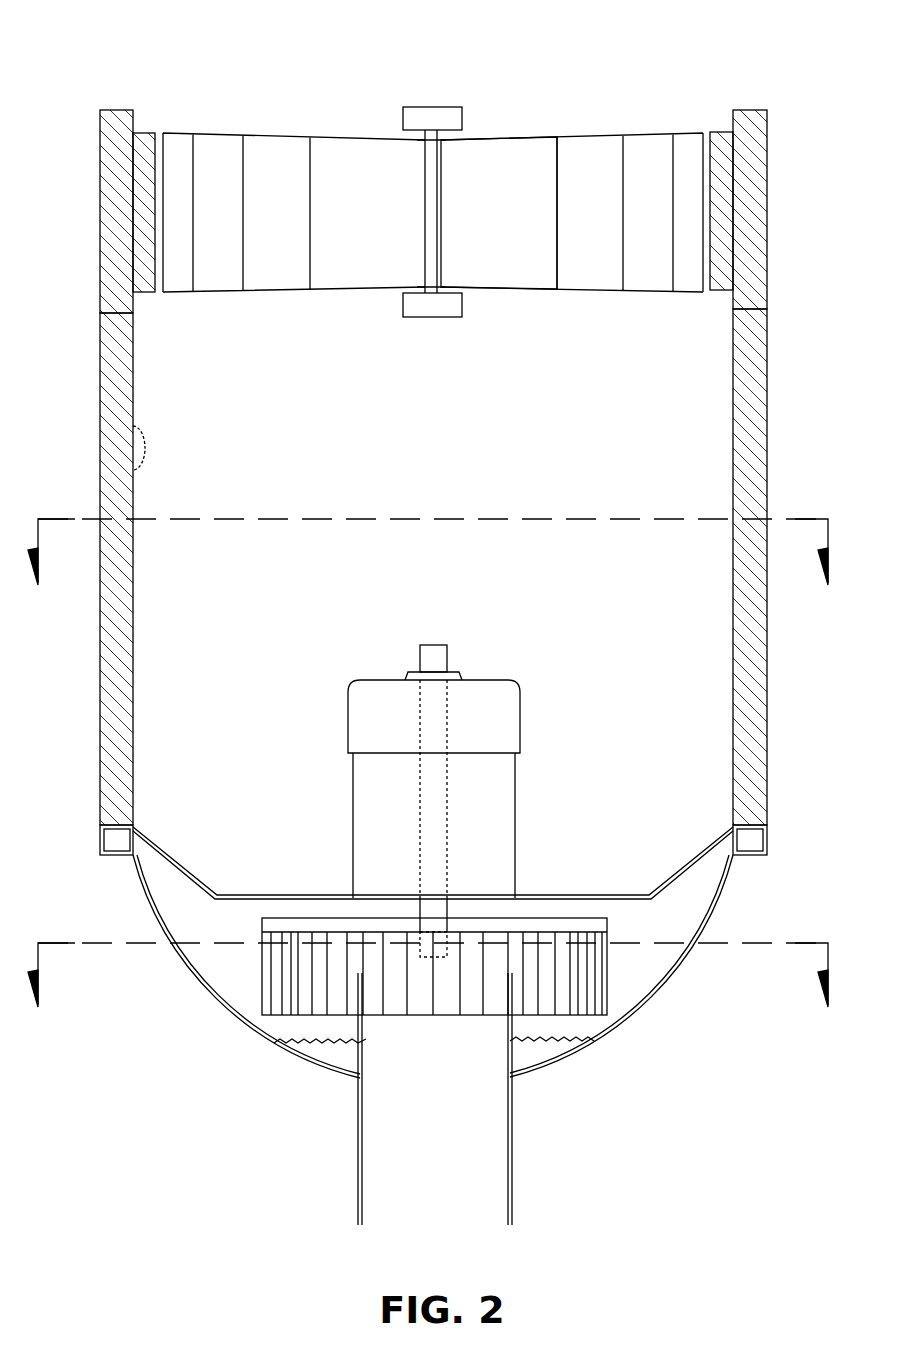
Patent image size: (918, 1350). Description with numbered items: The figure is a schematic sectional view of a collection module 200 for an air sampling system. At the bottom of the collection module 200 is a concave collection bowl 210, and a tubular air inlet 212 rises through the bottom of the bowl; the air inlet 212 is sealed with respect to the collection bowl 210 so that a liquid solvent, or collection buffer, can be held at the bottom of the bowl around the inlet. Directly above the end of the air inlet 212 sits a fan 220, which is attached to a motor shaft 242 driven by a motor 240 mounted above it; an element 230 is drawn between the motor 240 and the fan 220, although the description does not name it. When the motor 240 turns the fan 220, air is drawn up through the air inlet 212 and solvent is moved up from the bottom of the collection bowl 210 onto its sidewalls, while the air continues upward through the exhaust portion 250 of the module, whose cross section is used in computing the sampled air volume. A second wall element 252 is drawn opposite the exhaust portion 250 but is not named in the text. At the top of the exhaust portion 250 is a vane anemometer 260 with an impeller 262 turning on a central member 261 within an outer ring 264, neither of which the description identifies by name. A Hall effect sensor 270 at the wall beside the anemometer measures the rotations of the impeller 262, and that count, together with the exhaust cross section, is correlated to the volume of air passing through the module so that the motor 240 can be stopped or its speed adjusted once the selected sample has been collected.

The collection module 200 is at (127, 61).
The collection bowl 210 is at (660, 1003).
The air inlet 212 is at (513, 1144).
The fan 220 is at (419, 1017).
The conical plate 230 is at (175, 862).
The motor 240 is at (523, 681).
The motor shaft 242 is at (435, 644).
The exhaust portion 250 is at (134, 424).
The right vessel wall 252 is at (769, 469).
The vane anemometer 260 is at (214, 134).
The fan hub 261 is at (437, 106).
The impeller 262 is at (508, 276).
The fan ring 264 is at (727, 137).
The Hall effect sensor 270 is at (768, 147).